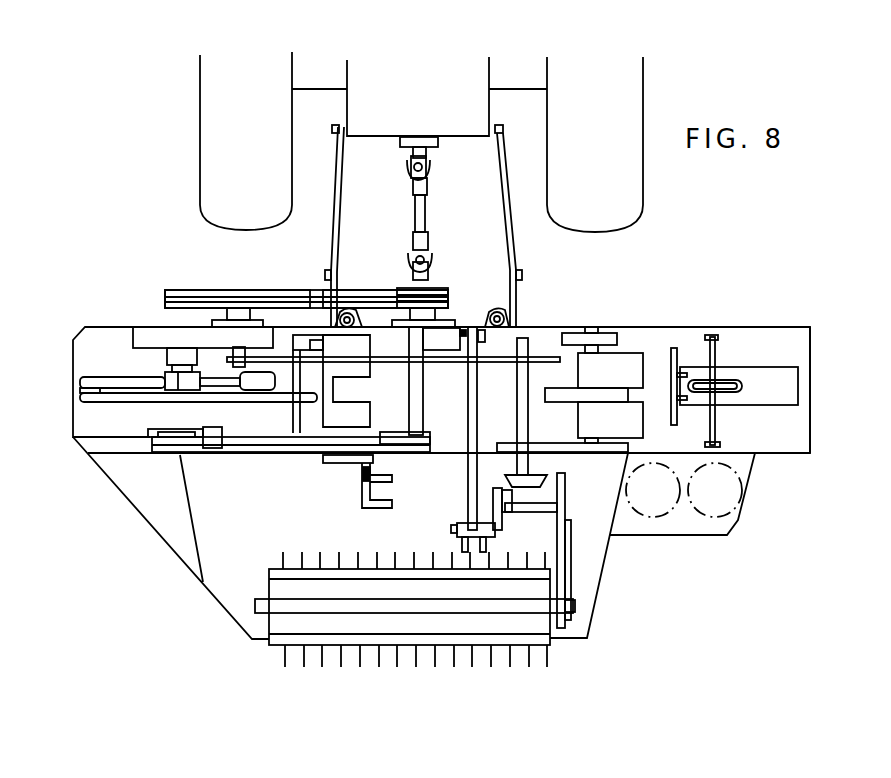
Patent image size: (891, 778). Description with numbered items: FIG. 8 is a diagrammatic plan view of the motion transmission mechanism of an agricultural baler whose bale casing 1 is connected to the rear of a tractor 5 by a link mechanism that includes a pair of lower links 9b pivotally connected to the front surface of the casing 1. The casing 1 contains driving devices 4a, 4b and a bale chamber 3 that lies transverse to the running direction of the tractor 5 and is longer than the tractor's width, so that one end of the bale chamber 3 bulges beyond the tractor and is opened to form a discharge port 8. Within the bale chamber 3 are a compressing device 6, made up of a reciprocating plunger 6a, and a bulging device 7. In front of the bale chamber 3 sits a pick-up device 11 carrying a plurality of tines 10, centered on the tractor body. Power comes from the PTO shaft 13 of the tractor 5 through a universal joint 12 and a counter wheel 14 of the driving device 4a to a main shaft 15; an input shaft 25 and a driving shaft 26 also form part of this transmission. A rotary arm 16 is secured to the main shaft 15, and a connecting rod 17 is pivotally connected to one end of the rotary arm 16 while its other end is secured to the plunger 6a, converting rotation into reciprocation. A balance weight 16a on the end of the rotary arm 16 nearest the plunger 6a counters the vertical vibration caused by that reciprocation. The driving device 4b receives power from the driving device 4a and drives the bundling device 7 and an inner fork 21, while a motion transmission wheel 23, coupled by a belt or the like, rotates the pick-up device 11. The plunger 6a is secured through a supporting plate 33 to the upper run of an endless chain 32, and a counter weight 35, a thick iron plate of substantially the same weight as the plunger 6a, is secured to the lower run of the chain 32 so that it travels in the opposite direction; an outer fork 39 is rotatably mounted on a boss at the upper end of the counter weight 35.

The bale casing 1 is at (823, 386).
The bale chamber 3 is at (540, 327).
The driving device 4a is at (203, 290).
The driving device 4b is at (500, 342).
The tractor 5 is at (468, 74).
The compressing device 6 is at (83, 354).
The plunger 6a is at (363, 390).
The bulging device 7 is at (625, 365).
The discharge port 8 is at (818, 426).
The lower links 9b is at (343, 196).
The tines 10 is at (493, 658).
The pick-up device 11 is at (303, 625).
The universal joint 12 is at (432, 218).
The PTO shaft 13 is at (428, 152).
The counter wheel 14 is at (240, 290).
The main shaft 15 is at (178, 368).
The rotary arm 16 is at (218, 378).
The balance weight 16a is at (268, 376).
The connecting rod 17 is at (120, 400).
The inner fork 21 is at (452, 525).
The motion transmission wheel 23 is at (568, 612).
The input shaft 25 is at (432, 285).
The driving shaft 26 is at (592, 327).
The endless chain 32 is at (275, 448).
The supporting plate 33 is at (213, 441).
The counter weight 35 is at (330, 461).
The outer fork 39 is at (378, 506).